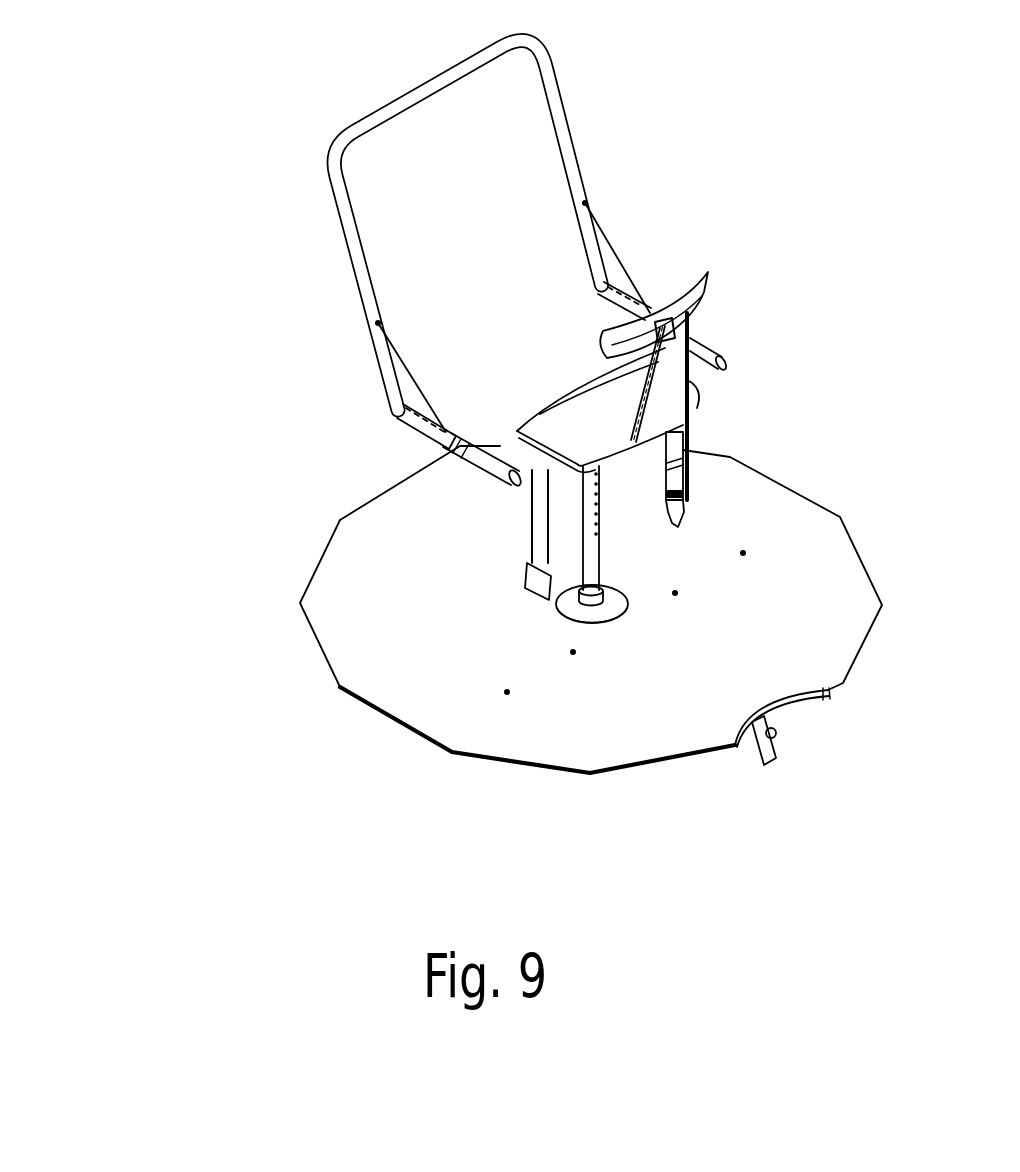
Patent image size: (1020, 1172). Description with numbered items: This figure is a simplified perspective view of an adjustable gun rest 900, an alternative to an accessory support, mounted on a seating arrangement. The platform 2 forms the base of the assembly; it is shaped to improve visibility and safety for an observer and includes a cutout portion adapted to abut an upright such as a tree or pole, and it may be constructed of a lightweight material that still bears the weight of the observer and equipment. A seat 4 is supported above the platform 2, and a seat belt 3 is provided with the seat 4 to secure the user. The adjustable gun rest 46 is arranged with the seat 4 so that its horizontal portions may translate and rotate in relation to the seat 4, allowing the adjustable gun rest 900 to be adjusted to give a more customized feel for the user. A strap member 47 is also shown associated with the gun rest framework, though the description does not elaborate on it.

The adjustable gun rest 900 is at (333, 747).
The platform 2 is at (432, 612).
The seat belt 3 is at (685, 485).
The seat 4 is at (577, 437).
The adjustable gun rest 46 is at (358, 298).
The backrest strap 47 is at (618, 257).